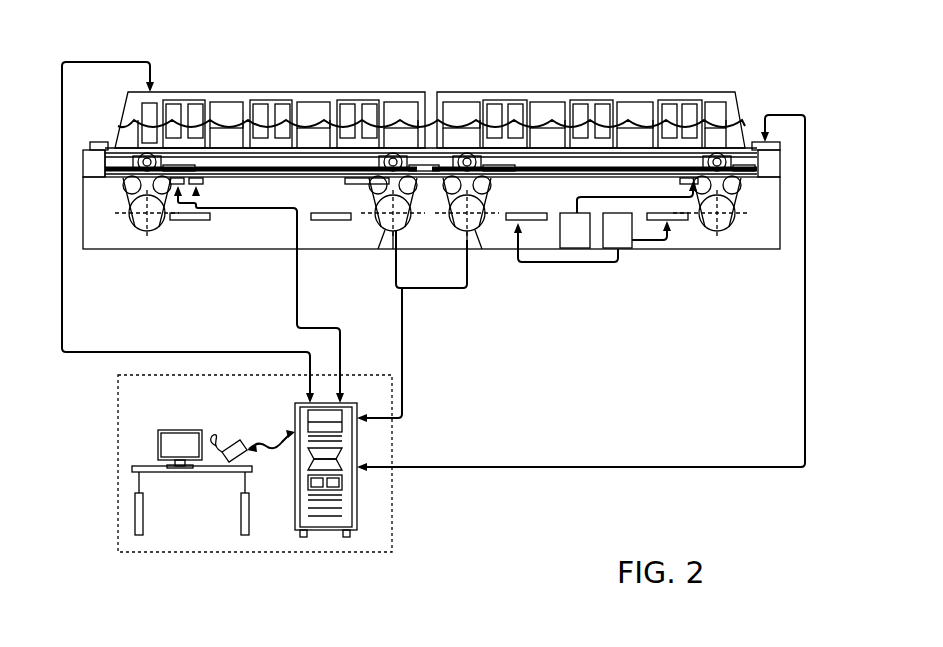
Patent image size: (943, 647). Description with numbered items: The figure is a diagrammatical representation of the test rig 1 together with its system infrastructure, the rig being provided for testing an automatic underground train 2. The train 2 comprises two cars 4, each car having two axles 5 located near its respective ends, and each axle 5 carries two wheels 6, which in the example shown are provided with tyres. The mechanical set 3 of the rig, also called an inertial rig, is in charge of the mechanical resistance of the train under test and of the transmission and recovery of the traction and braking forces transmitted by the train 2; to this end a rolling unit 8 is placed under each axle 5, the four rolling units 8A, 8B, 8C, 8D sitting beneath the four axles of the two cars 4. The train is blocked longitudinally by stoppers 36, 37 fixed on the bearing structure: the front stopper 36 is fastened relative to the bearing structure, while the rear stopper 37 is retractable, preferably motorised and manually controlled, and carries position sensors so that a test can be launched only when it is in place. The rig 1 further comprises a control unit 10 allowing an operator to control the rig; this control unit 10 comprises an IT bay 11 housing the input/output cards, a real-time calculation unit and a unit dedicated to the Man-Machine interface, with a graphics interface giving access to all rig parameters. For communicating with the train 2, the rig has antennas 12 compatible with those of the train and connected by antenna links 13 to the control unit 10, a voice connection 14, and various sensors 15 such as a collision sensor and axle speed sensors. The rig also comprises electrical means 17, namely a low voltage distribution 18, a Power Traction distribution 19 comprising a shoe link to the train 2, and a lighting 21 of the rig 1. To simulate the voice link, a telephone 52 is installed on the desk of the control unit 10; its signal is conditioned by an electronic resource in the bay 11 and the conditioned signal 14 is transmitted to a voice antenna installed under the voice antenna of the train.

The test rig 1 is at (489, 512).
The automatic underground train 2 is at (431, 78).
The mechanical set 3 is at (93, 142).
The cars 4 is at (422, 92).
The axles 5 is at (147, 158).
The wheels 6 is at (152, 160).
The rolling unit 8 is at (437, 249).
The rolling unit 8A is at (136, 232).
The rolling unit 8B is at (384, 234).
The rolling unit 8C is at (476, 236).
The rolling unit 8D is at (721, 233).
The control unit 10 is at (276, 498).
The IT bay 11 is at (360, 507).
The antennas 12 is at (205, 181).
The antenna links 13 is at (295, 300).
The voice connection 14 is at (153, 350).
The sensors 15 is at (405, 370).
The electrical means 17 is at (611, 283).
The low voltage distribution 18 is at (623, 248).
The Power Traction distribution 19 is at (575, 248).
The lighting 21 is at (194, 222).
The front stopper 36 is at (93, 165).
The rear stopper 37 is at (772, 172).
The telephone 52 is at (233, 437).